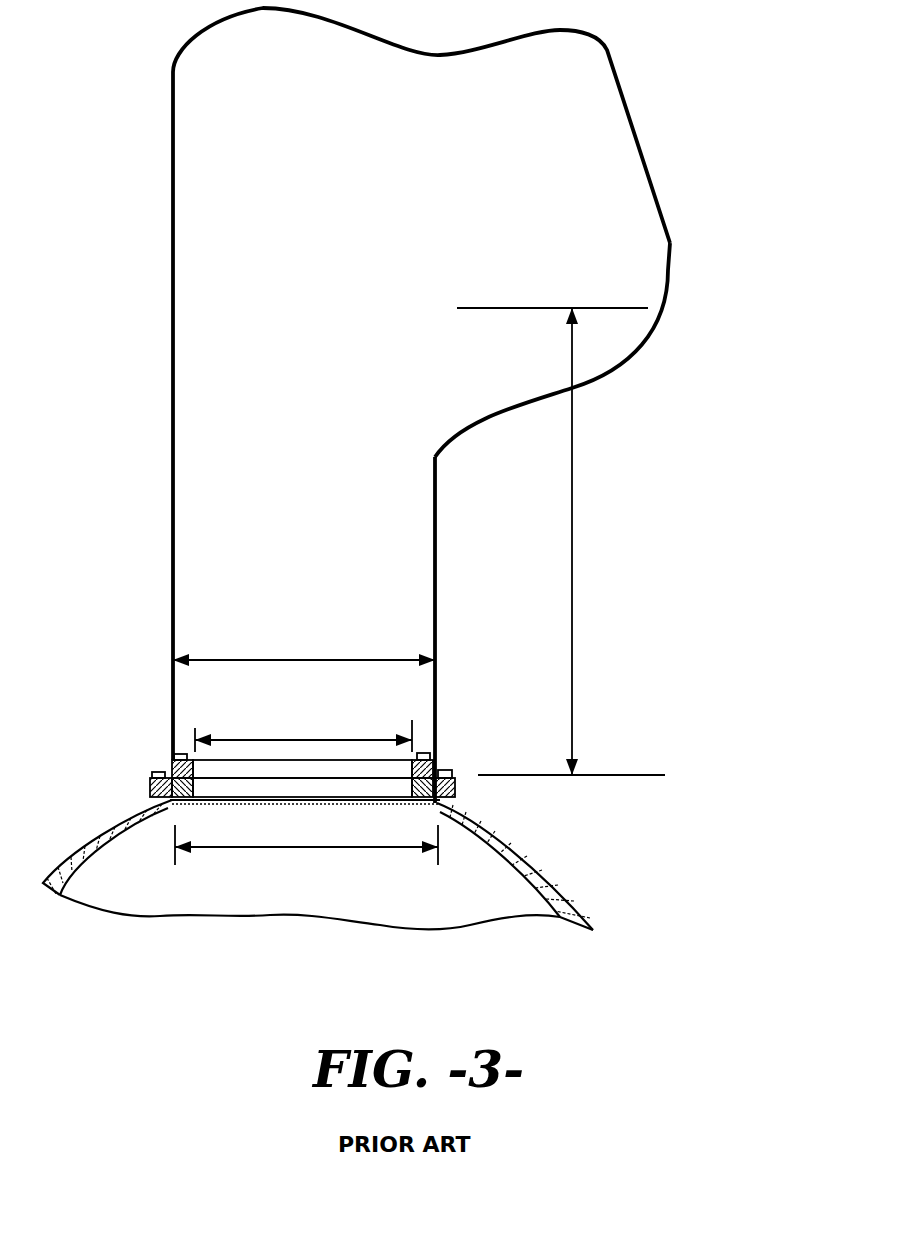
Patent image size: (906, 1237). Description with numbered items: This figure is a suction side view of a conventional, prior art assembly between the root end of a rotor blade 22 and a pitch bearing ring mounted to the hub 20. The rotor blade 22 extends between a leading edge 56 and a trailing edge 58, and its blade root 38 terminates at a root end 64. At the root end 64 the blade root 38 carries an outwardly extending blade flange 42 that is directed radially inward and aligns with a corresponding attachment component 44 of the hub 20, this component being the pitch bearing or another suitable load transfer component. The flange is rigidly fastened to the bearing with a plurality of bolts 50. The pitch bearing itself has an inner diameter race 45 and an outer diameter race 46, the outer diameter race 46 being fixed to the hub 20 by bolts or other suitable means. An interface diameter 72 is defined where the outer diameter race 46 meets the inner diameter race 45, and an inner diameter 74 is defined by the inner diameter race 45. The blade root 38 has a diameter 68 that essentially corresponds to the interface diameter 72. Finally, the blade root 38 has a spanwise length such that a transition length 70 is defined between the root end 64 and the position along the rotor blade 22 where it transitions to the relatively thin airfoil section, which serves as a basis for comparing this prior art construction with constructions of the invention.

The hub 20 is at (560, 856).
The rotor blade 22 is at (680, 115).
The blade root 38 is at (193, 580).
The blade flange 42 is at (387, 758).
The attachment component 44 is at (335, 779).
The inner diameter race 45 is at (421, 789).
The outer diameter race 46 is at (150, 790).
The bolts 50 is at (427, 760).
The leading edge 56 is at (177, 277).
The trailing edge 58 is at (667, 277).
The root end 64 is at (172, 778).
The diameter 68 is at (322, 659).
The transition length 70 is at (572, 543).
The interface diameter 72 is at (390, 848).
The inner diameter 74 is at (262, 740).